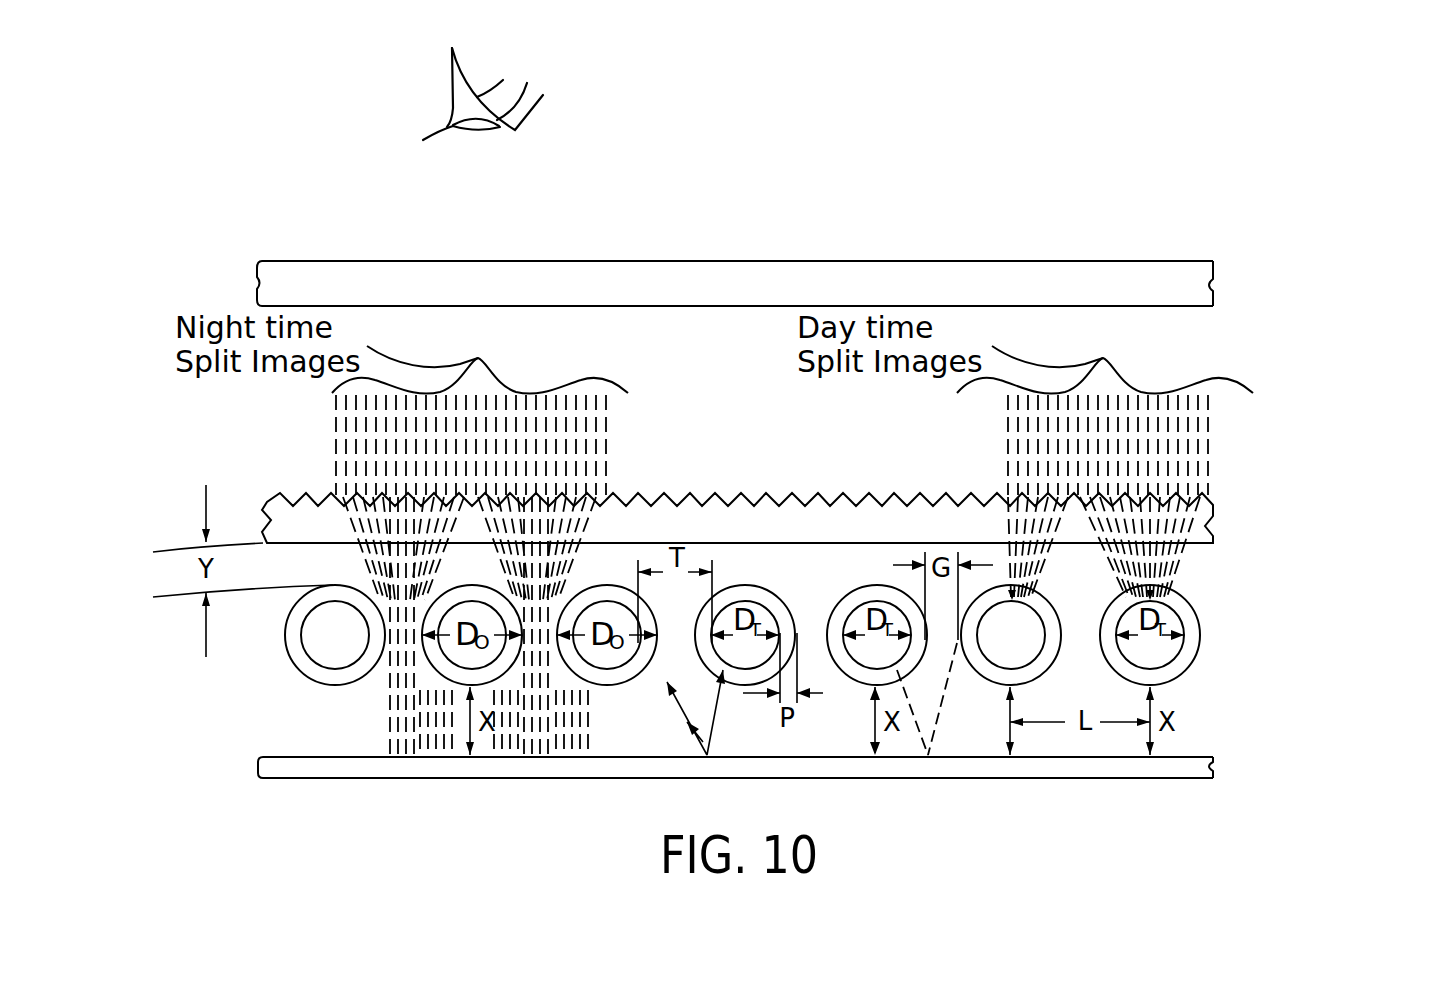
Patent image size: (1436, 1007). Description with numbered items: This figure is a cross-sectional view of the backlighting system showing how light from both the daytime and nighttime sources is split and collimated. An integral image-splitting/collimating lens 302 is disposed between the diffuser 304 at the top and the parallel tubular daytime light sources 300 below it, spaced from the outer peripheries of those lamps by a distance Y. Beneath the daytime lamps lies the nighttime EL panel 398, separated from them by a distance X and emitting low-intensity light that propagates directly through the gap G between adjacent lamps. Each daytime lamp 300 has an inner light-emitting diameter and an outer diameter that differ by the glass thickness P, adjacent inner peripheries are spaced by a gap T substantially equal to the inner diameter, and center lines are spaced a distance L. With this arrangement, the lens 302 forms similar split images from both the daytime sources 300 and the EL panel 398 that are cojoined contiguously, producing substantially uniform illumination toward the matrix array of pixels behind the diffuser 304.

The diffuser 304 is at (1213, 287).
The integral image-splitting/collimating lens 302 is at (1213, 530).
The daytime light source 300 is at (1200, 646).
The EL panel 398 is at (1213, 766).